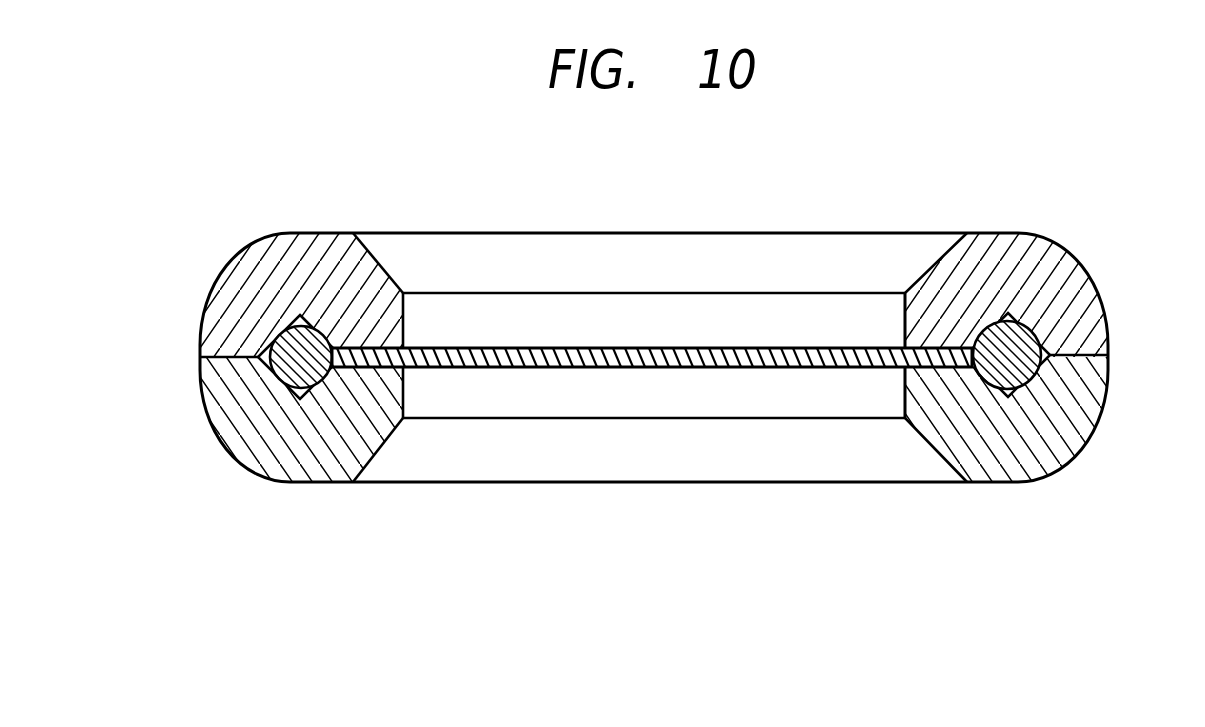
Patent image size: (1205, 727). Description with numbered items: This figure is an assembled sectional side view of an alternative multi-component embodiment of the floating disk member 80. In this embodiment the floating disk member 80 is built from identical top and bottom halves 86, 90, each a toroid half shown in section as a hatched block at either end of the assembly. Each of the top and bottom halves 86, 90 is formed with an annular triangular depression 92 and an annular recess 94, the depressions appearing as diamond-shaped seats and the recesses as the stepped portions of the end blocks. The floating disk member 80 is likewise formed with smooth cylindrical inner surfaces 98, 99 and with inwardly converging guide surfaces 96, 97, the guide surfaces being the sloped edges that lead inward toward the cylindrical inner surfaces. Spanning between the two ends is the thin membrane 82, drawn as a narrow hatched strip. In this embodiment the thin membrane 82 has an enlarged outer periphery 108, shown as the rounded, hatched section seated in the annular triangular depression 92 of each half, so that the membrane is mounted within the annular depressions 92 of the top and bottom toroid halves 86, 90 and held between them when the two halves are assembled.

The floating disk member 80 is at (1068, 198).
The thin membrane 82 is at (548, 367).
The top half 86 is at (216, 267).
The bottom half 90 is at (223, 451).
The annular triangular depression 92 is at (1033, 317).
The annular recess 94 is at (953, 355).
The inwardly converging guide surface 96 is at (355, 233).
The inwardly converging guide surface 97 is at (357, 482).
The smooth cylindrical inner surface 98 is at (905, 325).
The smooth cylindrical inner surface 99 is at (905, 405).
The enlarged outer periphery 108 is at (262, 352).